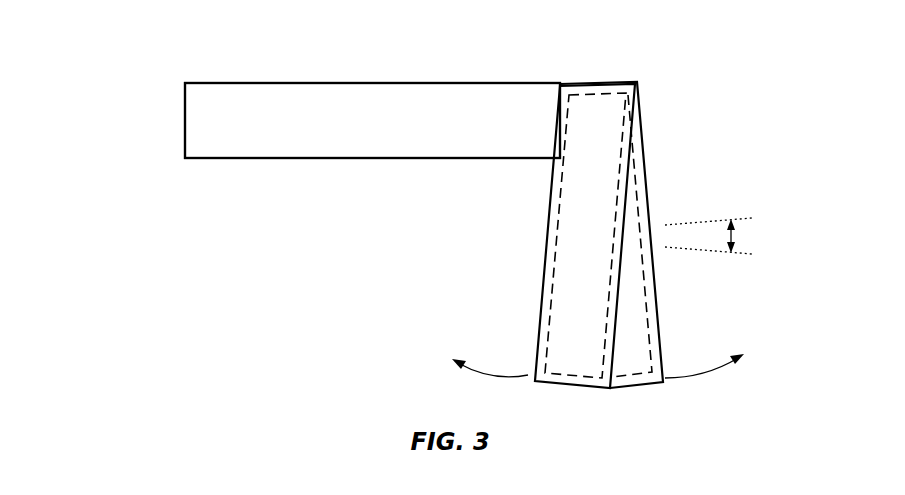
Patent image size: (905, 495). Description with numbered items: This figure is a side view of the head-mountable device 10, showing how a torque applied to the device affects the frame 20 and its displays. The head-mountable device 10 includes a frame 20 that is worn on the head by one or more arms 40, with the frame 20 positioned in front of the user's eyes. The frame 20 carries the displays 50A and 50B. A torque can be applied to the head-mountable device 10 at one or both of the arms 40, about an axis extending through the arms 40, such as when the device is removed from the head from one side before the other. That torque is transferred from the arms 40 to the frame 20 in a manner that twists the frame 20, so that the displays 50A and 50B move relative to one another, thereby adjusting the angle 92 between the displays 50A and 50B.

The head-mountable device 10 is at (70, 78).
The arm 40 is at (258, 104).
The frame 20 is at (600, 84).
The display 50A is at (648, 325).
The display 50B is at (600, 160).
The angle 92 is at (724, 236).